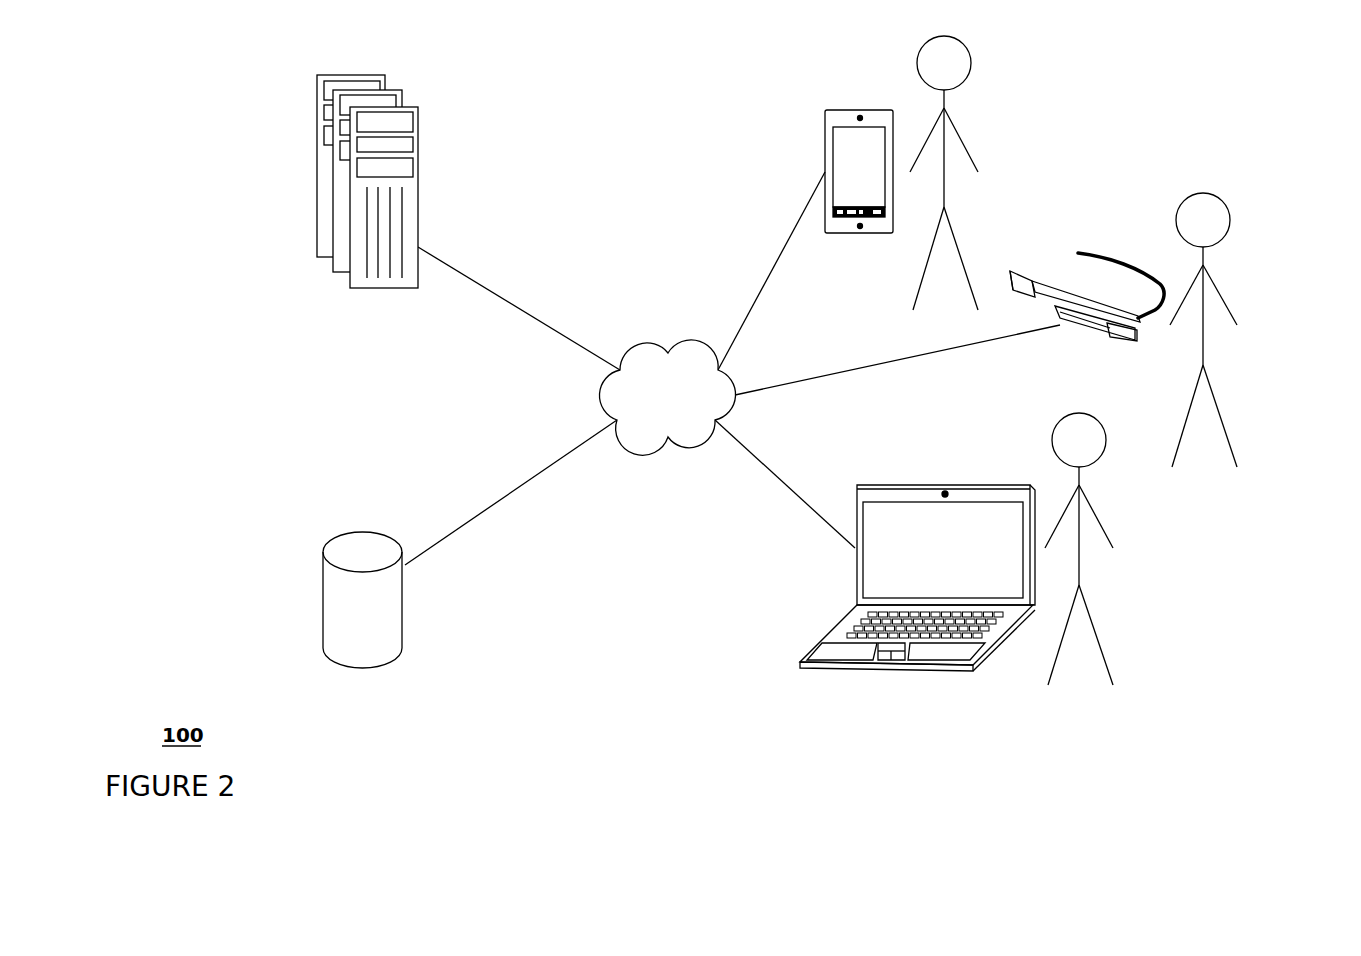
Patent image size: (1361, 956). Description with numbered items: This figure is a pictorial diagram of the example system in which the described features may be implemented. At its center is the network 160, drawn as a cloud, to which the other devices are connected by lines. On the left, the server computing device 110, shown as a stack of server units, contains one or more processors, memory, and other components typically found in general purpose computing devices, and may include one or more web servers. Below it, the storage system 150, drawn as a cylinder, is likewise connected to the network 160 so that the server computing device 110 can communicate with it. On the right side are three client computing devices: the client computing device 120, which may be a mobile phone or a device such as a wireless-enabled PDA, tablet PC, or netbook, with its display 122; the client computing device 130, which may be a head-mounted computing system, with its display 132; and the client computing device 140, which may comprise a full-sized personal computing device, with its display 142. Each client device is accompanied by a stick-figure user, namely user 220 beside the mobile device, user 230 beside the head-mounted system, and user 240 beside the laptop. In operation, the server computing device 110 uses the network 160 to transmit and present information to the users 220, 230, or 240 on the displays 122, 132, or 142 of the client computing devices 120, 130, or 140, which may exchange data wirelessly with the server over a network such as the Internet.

The computing device 110 is at (420, 150).
The client computing device 120 is at (805, 171).
The display 122 is at (830, 168).
The client computing device 130 is at (1087, 288).
The display 132 is at (1123, 337).
The client computing device 140 is at (893, 578).
The display 142 is at (855, 590).
The storage system 150 is at (403, 620).
The network 160 is at (667, 398).
The user 220 is at (972, 160).
The user 230 is at (1238, 322).
The user 240 is at (1115, 545).